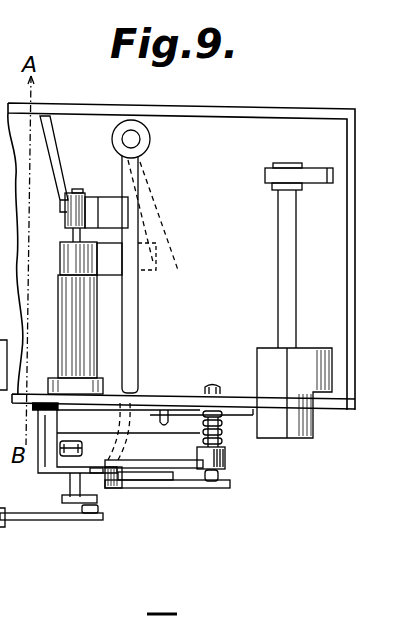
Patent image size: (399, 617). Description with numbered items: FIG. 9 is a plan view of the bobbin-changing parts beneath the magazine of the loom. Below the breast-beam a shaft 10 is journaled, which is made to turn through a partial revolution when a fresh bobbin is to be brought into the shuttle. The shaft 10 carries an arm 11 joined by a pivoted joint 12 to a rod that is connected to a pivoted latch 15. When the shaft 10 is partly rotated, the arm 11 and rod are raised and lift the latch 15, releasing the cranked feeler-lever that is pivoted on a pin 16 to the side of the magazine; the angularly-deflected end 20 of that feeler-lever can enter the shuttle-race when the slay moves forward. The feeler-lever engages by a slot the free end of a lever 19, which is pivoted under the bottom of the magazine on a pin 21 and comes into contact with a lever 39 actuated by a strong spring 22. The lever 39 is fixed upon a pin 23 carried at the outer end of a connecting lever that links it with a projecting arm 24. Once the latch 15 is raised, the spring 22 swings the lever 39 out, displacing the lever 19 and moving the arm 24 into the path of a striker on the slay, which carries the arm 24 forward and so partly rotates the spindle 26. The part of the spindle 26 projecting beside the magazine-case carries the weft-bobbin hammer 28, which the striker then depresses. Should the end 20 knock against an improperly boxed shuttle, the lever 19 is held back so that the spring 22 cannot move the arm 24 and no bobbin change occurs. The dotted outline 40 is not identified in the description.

The shaft 10 is at (0, 583).
The arm 11 is at (50, 515).
The pivoted joint 12 is at (88, 523).
The pivoted latch 15 is at (68, 473).
The pin 16 is at (222, 475).
The lever 19 is at (127, 347).
The angularly-deflected end 20 is at (202, 488).
The pin 21 is at (136, 141).
The spring 22 is at (55, 163).
The pin 23 is at (75, 235).
The projecting arm 24 is at (67, 260).
The spindle 26 is at (72, 343).
The weft-bobbin hammer 28 is at (293, 175).
The lever 39 is at (105, 203).
The stop 40 is at (145, 265).